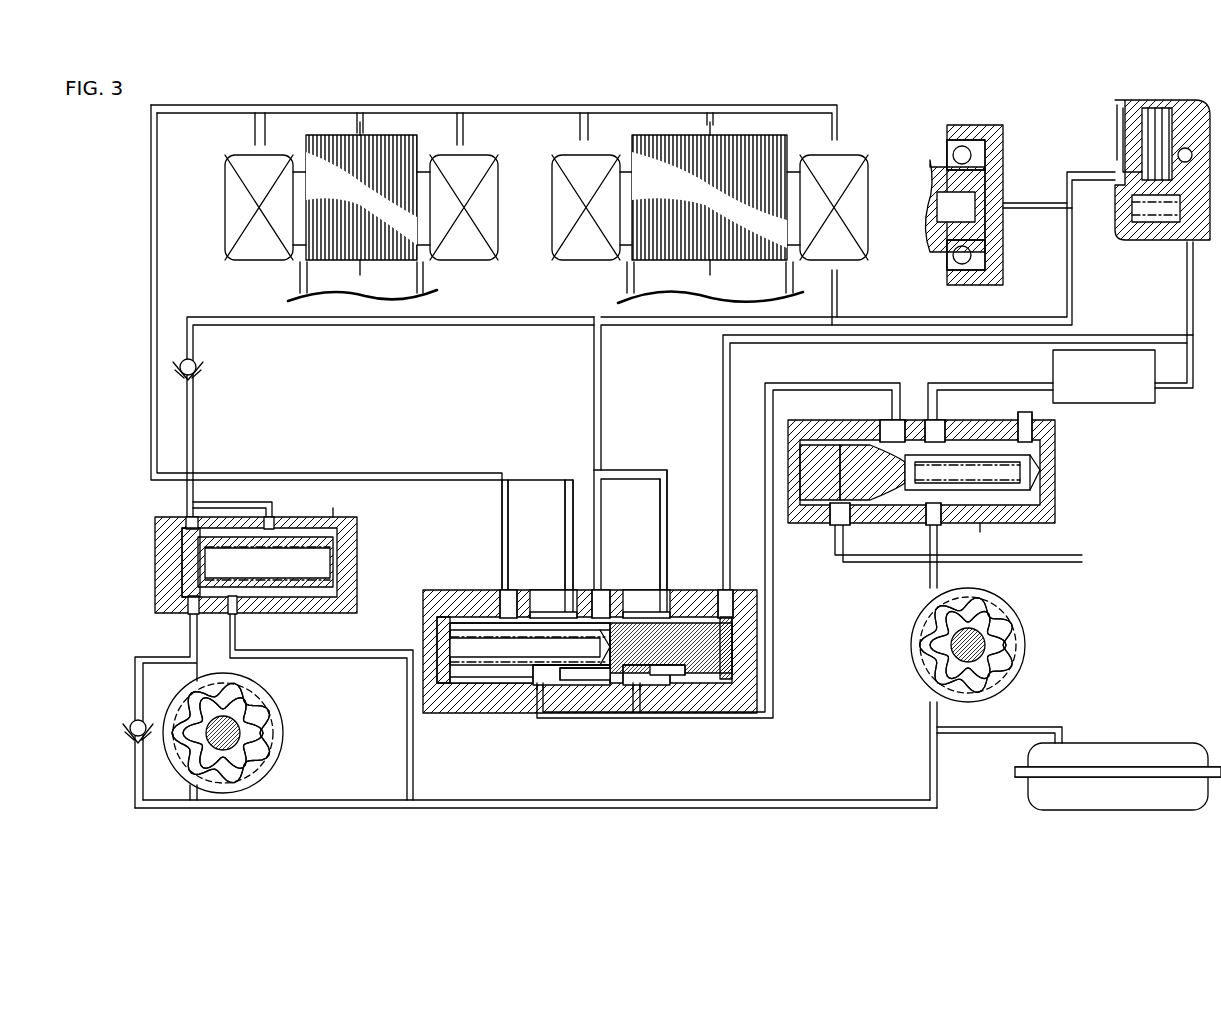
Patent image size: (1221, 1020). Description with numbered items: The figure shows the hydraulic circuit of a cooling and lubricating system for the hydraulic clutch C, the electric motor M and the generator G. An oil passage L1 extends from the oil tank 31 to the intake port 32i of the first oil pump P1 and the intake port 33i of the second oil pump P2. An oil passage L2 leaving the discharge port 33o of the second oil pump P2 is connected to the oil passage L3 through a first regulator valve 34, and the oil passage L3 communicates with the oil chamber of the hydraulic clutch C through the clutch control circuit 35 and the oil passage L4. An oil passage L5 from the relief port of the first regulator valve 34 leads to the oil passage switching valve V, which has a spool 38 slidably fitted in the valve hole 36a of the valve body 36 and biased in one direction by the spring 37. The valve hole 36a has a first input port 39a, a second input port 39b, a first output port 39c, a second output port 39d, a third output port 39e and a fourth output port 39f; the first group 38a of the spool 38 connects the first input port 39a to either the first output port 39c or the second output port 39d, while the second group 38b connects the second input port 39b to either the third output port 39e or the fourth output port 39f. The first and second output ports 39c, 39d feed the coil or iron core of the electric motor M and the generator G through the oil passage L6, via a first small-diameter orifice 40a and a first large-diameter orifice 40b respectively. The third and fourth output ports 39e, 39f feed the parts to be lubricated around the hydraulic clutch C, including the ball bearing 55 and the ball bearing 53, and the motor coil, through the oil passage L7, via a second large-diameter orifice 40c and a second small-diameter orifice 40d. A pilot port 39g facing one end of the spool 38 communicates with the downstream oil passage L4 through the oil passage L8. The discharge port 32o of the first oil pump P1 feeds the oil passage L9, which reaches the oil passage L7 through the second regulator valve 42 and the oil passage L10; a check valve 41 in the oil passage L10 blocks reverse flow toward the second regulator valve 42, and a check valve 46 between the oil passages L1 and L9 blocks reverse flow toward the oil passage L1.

The oil tank 31 is at (1143, 750).
The discharge port 32o is at (268, 703).
The intake port 32i is at (262, 760).
The discharge port 33o is at (1010, 615).
The intake port 33i is at (1015, 672).
The first regulator valve 34 is at (1058, 450).
The clutch control circuit 35 is at (1120, 404).
The valve body 36 is at (478, 708).
The valve hole 36a is at (485, 685).
The spring 37 is at (446, 685).
The spool 38 is at (671, 648).
The first group 38a is at (570, 690).
The second group 38b is at (672, 685).
The first input port 39a is at (540, 688).
The second input port 39b is at (637, 688).
The first output port 39c is at (504, 615).
The second output port 39d is at (560, 615).
The third output port 39e is at (604, 615).
The fourth output port 39f is at (665, 615).
The pilot port 39g is at (730, 612).
The first small-diameter orifice 40a is at (506, 530).
The first large-diameter orifice 40b is at (569, 570).
The second large-diameter orifice 40c is at (598, 530).
The second small-diameter orifice 40d is at (666, 565).
The check valve 41 is at (197, 363).
The second regulator valve 42 is at (357, 567).
The check valve 46 is at (144, 722).
The ball bearing 53 is at (942, 155).
The ball bearing 55 is at (966, 205).
The hydraulic clutch C is at (1110, 152).
The generator G is at (290, 266).
The electric motor M is at (618, 266).
The first oil pump P1 is at (283, 736).
The second oil pump P2 is at (910, 657).
The oil passage switching valve V is at (657, 580).
The oil passage L1 is at (362, 800).
The oil passage L2 is at (925, 536).
The oil passage L3 is at (1012, 383).
The oil passage L4 is at (1187, 328).
The oil passage L5 is at (868, 383).
The oil passage L6 is at (521, 113).
The oil passage L7 is at (594, 400).
The oil passage L8 is at (722, 440).
The oil passage L9 is at (190, 648).
The oil passage L10 is at (386, 320).